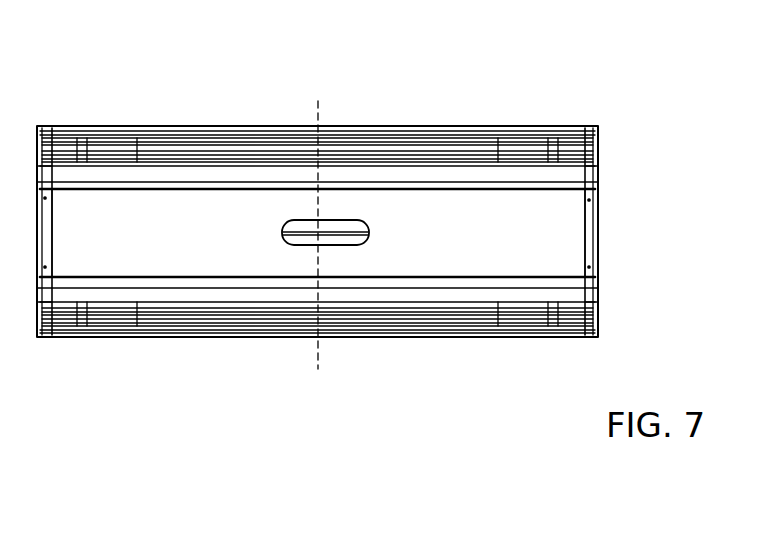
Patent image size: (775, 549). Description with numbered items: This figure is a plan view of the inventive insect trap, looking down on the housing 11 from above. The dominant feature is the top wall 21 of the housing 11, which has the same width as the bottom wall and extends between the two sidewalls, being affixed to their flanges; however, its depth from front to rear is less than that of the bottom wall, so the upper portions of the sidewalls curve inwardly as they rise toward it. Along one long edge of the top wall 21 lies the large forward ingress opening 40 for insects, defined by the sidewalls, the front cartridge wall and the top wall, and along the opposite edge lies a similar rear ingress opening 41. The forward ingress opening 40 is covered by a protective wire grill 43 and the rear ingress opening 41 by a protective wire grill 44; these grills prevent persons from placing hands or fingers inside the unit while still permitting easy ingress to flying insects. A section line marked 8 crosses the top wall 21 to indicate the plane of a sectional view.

The housing 11 is at (602, 255).
The top wall 21 is at (575, 223).
The rear ingress opening 41 is at (497, 122).
The protective wire grill 44 is at (118, 126).
The ingress opening 40 is at (497, 348).
The protective wire grill 43 is at (113, 339).
The section line for FIG. 8 is at (318, 101).